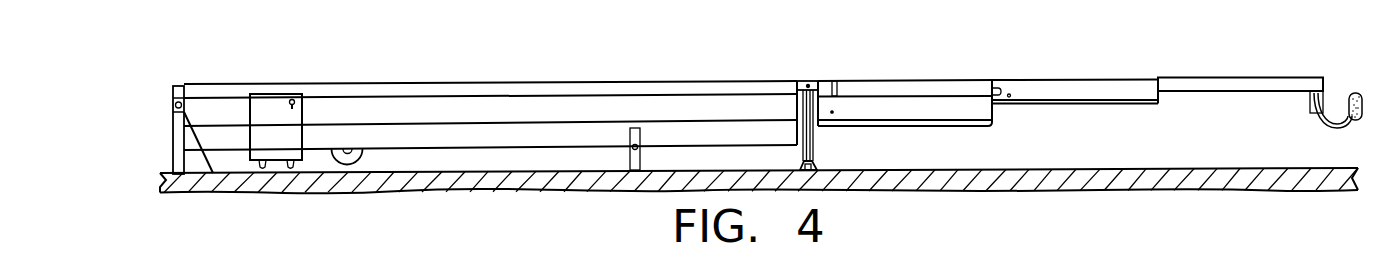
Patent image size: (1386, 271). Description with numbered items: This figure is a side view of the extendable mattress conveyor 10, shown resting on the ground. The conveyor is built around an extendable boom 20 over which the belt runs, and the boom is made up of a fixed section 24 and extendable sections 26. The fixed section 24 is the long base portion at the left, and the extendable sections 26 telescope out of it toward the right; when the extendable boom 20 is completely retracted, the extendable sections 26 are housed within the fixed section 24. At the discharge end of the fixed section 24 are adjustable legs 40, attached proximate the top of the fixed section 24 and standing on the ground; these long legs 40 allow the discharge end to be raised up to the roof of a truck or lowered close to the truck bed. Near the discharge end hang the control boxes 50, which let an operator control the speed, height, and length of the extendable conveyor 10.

The extendable mattress conveyor 10 is at (262, 45).
The extendable boom 20 is at (925, 75).
The fixed section 24 is at (500, 80).
The extendable sections 26 is at (882, 79).
The adjustable legs 40 is at (813, 148).
The control boxes 50 is at (1356, 91).